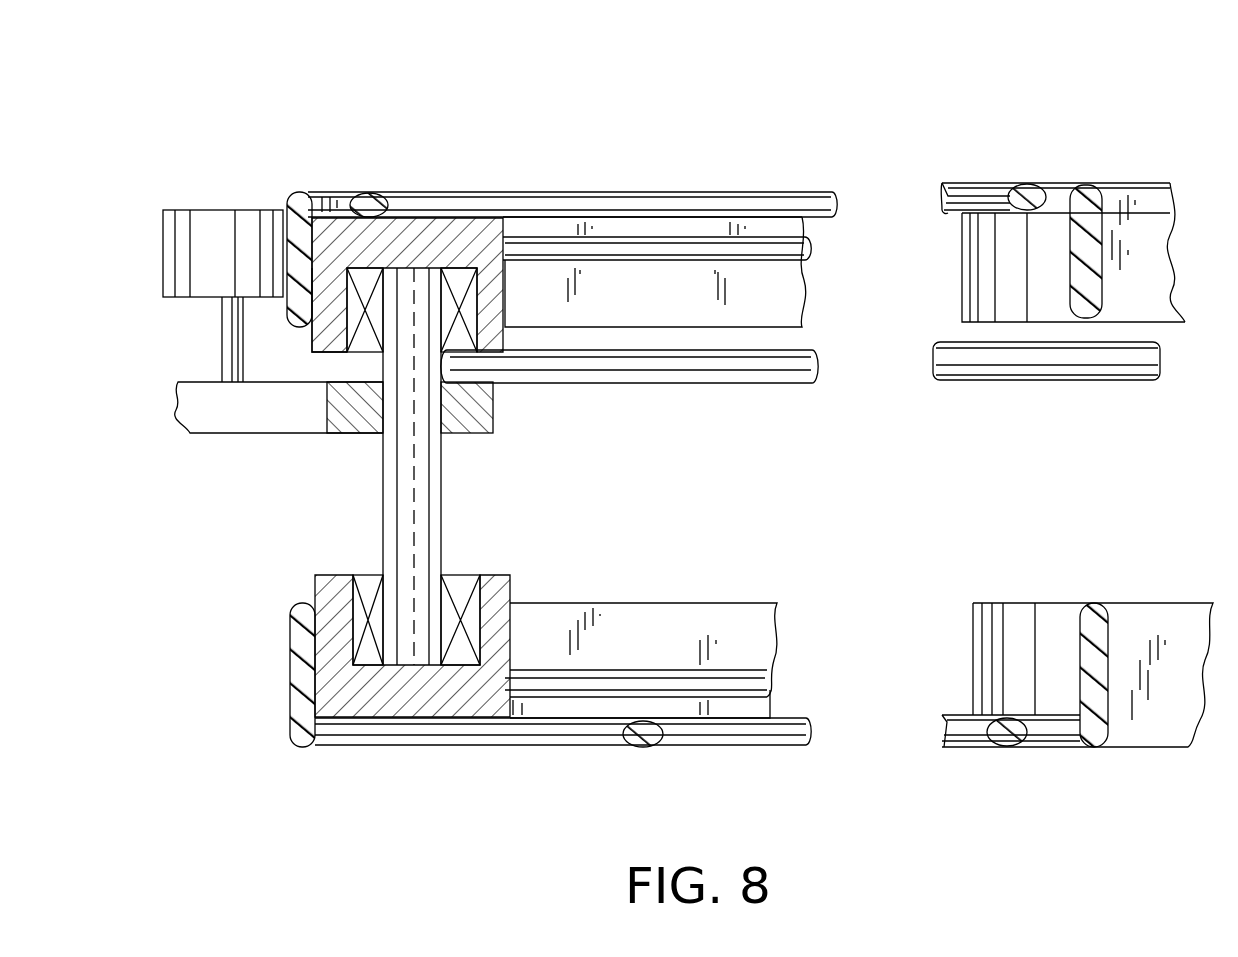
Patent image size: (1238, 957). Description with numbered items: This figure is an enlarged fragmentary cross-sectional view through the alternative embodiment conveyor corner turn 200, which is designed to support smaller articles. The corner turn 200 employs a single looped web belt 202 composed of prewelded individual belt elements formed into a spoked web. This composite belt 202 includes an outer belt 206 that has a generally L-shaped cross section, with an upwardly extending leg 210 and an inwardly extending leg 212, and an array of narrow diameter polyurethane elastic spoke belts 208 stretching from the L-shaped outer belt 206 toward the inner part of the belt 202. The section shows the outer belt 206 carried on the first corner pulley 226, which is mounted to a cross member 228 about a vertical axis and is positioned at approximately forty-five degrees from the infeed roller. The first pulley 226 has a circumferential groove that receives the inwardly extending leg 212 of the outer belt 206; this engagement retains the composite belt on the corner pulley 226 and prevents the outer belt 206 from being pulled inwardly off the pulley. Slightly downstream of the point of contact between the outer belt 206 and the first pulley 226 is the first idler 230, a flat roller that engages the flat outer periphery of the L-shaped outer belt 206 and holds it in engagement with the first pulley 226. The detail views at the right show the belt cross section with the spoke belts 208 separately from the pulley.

The conveyor corner turn 200 is at (967, 140).
The looped web belt 202 is at (795, 191).
The outer belt 206 is at (297, 321).
The elastic spoke belts 208 is at (628, 218).
The upwardly extending leg 210 is at (291, 198).
The inwardly extending leg 212 is at (332, 247).
The first corner pulley 226 is at (440, 222).
The cross member 228 is at (470, 437).
The first idler 230 is at (202, 298).